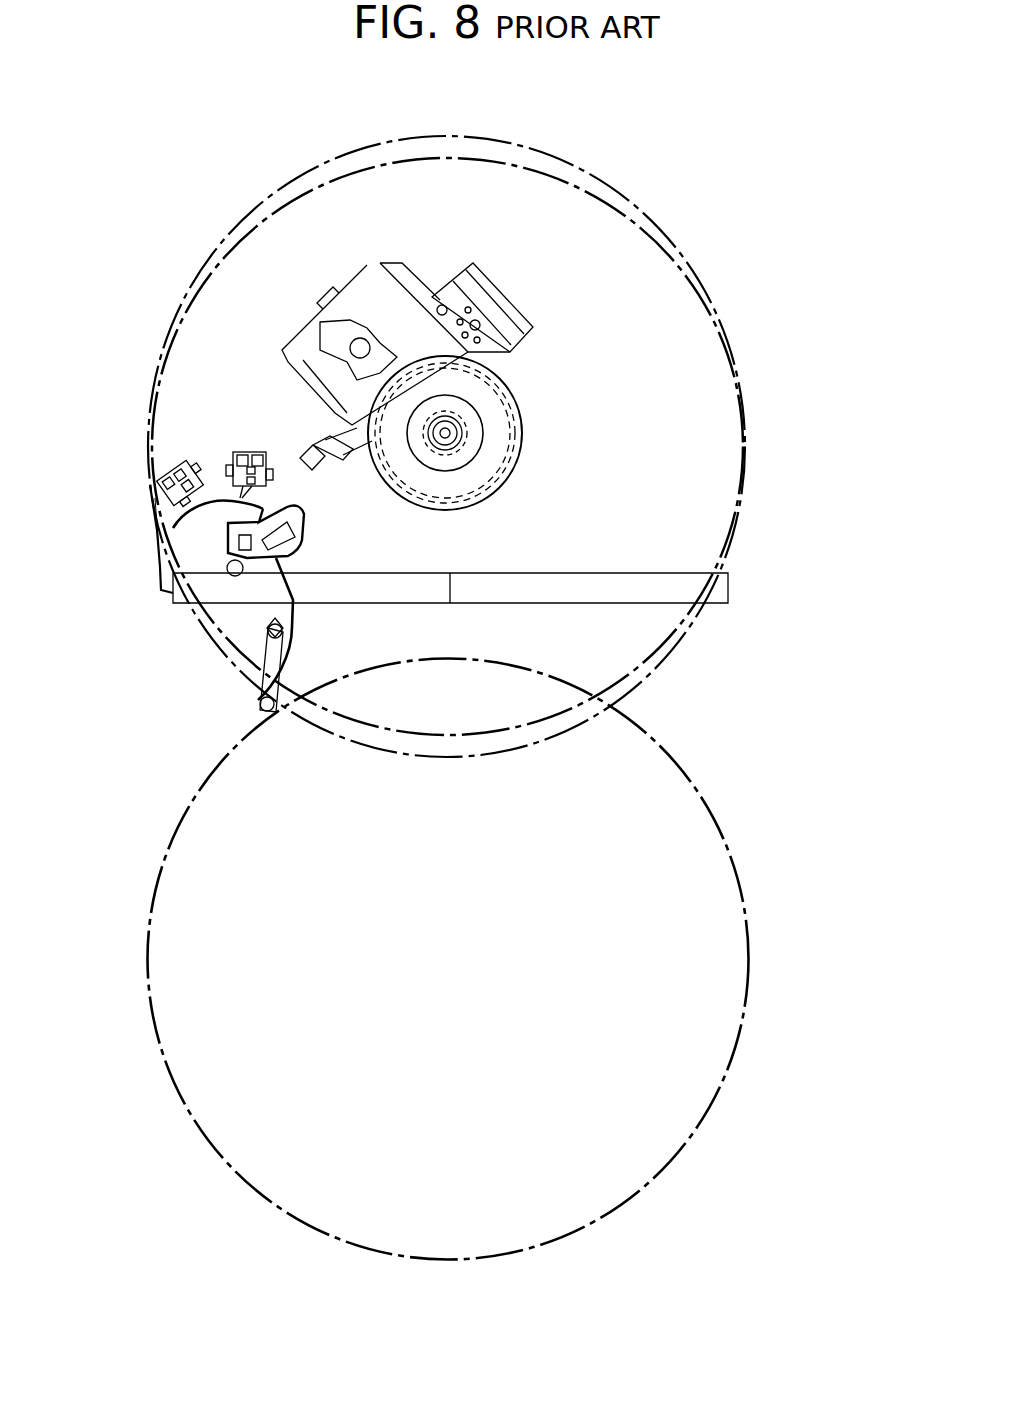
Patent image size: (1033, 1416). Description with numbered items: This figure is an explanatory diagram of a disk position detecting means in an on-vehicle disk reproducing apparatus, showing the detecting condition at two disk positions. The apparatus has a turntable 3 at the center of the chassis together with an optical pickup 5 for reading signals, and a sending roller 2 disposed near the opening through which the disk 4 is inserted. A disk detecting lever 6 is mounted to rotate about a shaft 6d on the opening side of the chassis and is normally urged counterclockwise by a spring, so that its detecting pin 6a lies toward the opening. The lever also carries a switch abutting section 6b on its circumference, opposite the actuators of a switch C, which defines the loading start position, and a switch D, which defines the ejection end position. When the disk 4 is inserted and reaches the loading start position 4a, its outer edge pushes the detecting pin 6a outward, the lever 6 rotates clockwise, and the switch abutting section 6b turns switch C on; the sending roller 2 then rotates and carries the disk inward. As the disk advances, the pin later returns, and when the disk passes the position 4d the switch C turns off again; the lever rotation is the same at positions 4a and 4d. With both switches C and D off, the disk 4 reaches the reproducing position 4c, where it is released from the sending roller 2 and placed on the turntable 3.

The sending roller 2 is at (662, 573).
The turntable 3 is at (522, 430).
The disk 4 is at (429, 670).
The loading start position 4a is at (676, 752).
The reproducing position 4c is at (578, 160).
The disk position 4d is at (612, 205).
The optical pickup 5 is at (370, 302).
The disk detecting lever 6 is at (193, 609).
The detecting pin 6a is at (257, 713).
The switch abutting section 6b is at (160, 532).
The shaft 6d is at (235, 577).
The switch C is at (168, 470).
The switch D is at (246, 450).